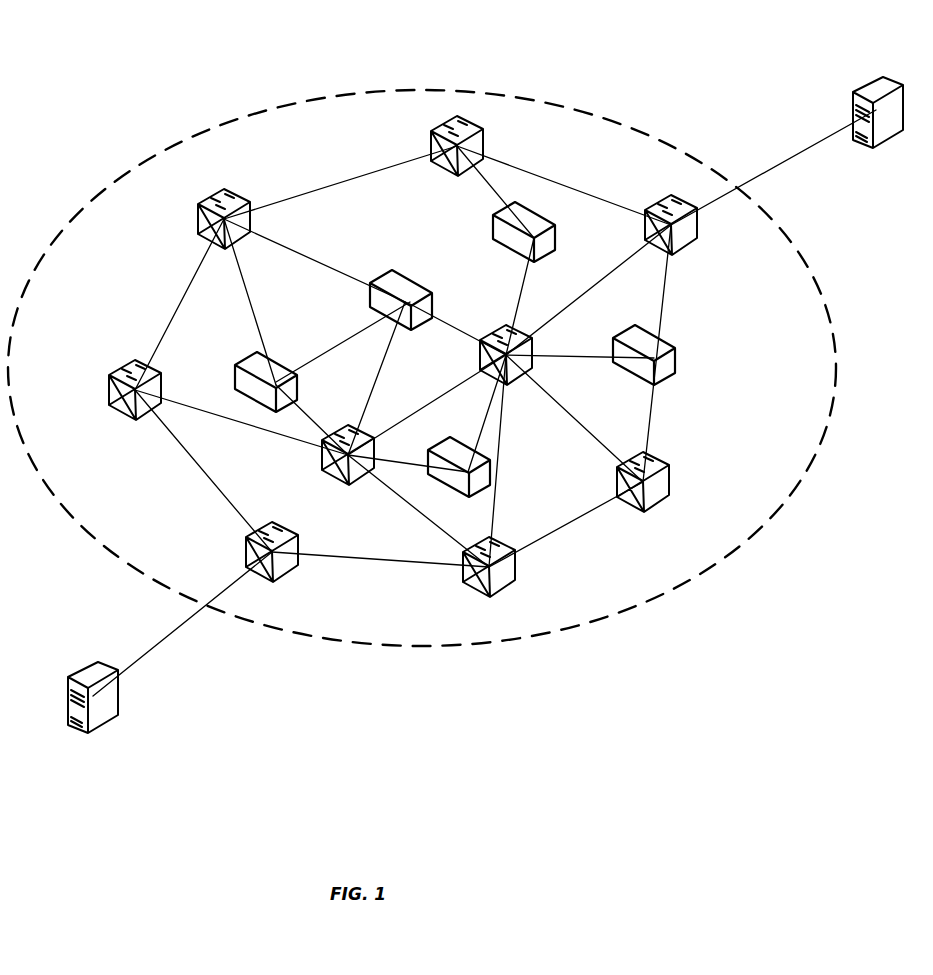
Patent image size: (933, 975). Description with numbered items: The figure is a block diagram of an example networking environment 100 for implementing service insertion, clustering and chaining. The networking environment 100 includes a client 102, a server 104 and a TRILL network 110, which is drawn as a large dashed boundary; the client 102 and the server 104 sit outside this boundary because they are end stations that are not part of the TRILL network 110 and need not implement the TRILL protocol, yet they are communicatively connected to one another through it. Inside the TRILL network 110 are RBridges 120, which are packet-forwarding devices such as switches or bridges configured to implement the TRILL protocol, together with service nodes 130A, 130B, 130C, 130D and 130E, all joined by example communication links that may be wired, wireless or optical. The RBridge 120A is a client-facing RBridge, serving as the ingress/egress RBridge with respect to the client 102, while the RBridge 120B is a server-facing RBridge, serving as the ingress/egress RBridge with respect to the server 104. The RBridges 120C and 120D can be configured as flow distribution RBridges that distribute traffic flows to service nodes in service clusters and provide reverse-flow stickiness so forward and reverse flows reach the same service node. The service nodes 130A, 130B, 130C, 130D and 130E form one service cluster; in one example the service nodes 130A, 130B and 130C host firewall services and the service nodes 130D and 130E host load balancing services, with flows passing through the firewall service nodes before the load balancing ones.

The networking environment 100 is at (392, 33).
The client 102 is at (88, 720).
The server 104 is at (887, 126).
The TRILL network 110 is at (203, 130).
The RBridges 120 is at (390, 360).
The client-facing RBridge 120A is at (272, 565).
The server-facing RBridge 120B is at (700, 225).
The flow distribution RBridge 120C is at (348, 465).
The flow distribution RBridge 120D is at (499, 343).
The service node 130A is at (238, 379).
The service node 130B is at (457, 479).
The service node 130C is at (391, 287).
The service node 130D is at (665, 359).
The service node 130E is at (537, 239).